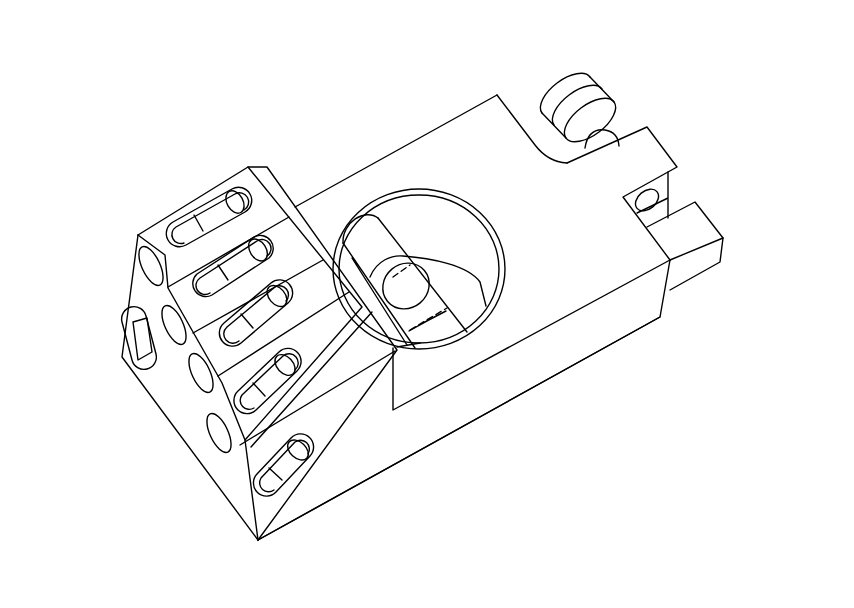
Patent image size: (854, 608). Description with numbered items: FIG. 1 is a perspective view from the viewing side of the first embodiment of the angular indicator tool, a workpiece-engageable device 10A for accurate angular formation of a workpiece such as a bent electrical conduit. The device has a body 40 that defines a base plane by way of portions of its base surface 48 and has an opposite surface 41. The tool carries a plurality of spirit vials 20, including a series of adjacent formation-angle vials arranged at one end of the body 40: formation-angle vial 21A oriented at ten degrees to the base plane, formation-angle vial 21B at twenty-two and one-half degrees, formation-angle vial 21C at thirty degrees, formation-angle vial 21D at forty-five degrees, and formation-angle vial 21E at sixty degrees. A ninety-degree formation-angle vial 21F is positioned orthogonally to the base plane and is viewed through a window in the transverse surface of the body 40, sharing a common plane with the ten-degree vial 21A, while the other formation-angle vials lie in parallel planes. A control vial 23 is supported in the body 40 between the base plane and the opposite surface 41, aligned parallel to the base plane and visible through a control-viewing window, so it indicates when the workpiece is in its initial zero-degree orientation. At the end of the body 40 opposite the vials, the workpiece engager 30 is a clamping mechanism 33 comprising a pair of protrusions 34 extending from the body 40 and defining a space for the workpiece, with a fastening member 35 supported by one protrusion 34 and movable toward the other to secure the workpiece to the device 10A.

The workpiece-engageable device 10A is at (99, 119).
The spirit vials 20 is at (210, 222).
The formation-angle vial 21A is at (205, 215).
The formation-angle vial 21B is at (273, 238).
The formation-angle vial 21C is at (215, 340).
The formation-angle vial 21D is at (245, 408).
The formation-angle vial 21E is at (243, 517).
The 90° formation-angle vial 21F is at (147, 333).
The control vial 23 is at (444, 336).
The engager 30 is at (614, 82).
The clamping mechanism 33 is at (666, 142).
The protrusions 34 is at (676, 165).
The fastening member 35 is at (559, 78).
The body 40 is at (617, 323).
The opposite surface 41 is at (460, 117).
The base surface 48 is at (560, 378).